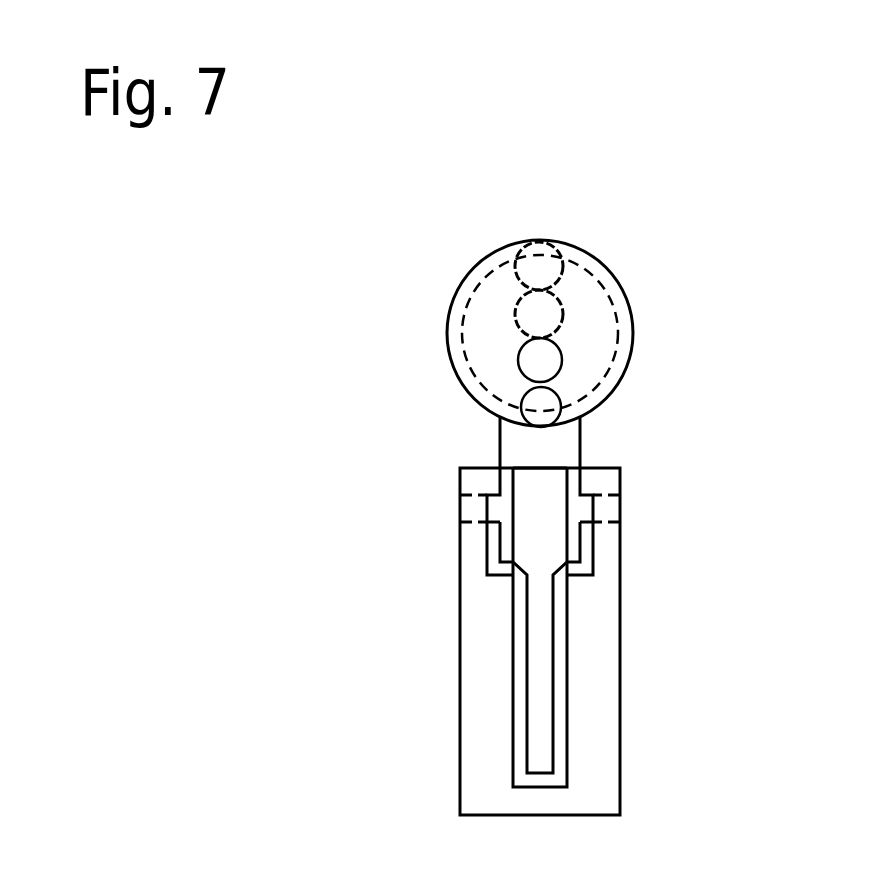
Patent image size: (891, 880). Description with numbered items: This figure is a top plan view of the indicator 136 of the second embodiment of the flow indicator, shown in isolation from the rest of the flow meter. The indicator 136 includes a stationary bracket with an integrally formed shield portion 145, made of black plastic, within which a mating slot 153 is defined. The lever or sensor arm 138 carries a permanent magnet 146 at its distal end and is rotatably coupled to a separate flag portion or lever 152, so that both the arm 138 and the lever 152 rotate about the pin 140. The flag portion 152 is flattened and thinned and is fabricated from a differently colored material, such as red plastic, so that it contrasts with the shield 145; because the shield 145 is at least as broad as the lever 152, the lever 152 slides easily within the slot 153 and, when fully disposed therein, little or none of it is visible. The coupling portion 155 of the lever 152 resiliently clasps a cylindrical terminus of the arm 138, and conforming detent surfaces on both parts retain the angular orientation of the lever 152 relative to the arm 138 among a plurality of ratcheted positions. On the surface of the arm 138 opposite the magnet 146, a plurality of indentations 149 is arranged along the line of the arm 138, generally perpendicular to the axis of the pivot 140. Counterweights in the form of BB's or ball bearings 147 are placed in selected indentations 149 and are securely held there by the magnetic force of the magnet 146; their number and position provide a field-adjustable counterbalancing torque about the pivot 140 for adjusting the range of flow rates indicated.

The indicator 136 is at (290, 603).
The sensor arm 138 is at (634, 337).
The pin 140 is at (618, 507).
The shield portion 145 is at (604, 622).
The permanent magnet 146 is at (479, 329).
The BB's 147 is at (525, 317).
The indentations 149 is at (563, 360).
The flag portion 152 is at (540, 742).
The slot 153 is at (513, 697).
The coupling portion 155 is at (545, 493).